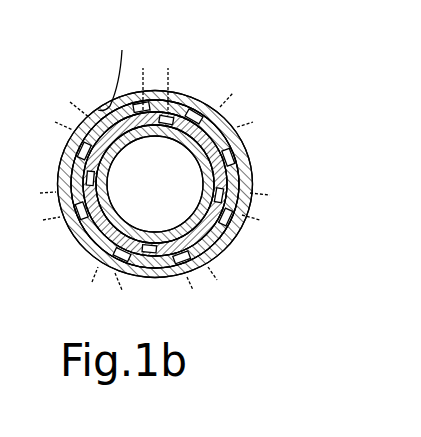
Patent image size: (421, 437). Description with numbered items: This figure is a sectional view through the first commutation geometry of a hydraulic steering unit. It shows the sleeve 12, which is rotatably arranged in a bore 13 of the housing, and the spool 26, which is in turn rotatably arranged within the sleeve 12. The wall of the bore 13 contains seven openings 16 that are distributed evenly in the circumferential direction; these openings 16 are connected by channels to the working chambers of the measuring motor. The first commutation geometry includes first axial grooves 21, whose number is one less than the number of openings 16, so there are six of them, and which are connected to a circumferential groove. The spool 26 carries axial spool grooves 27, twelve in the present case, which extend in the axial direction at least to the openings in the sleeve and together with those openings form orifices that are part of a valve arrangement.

The sleeve 12 is at (179, 184).
The bore 13 is at (107, 65).
The openings 16 is at (184, 64).
The first axial grooves 21 is at (192, 142).
The spool 26 is at (199, 206).
The axial spool grooves 27 is at (205, 184).